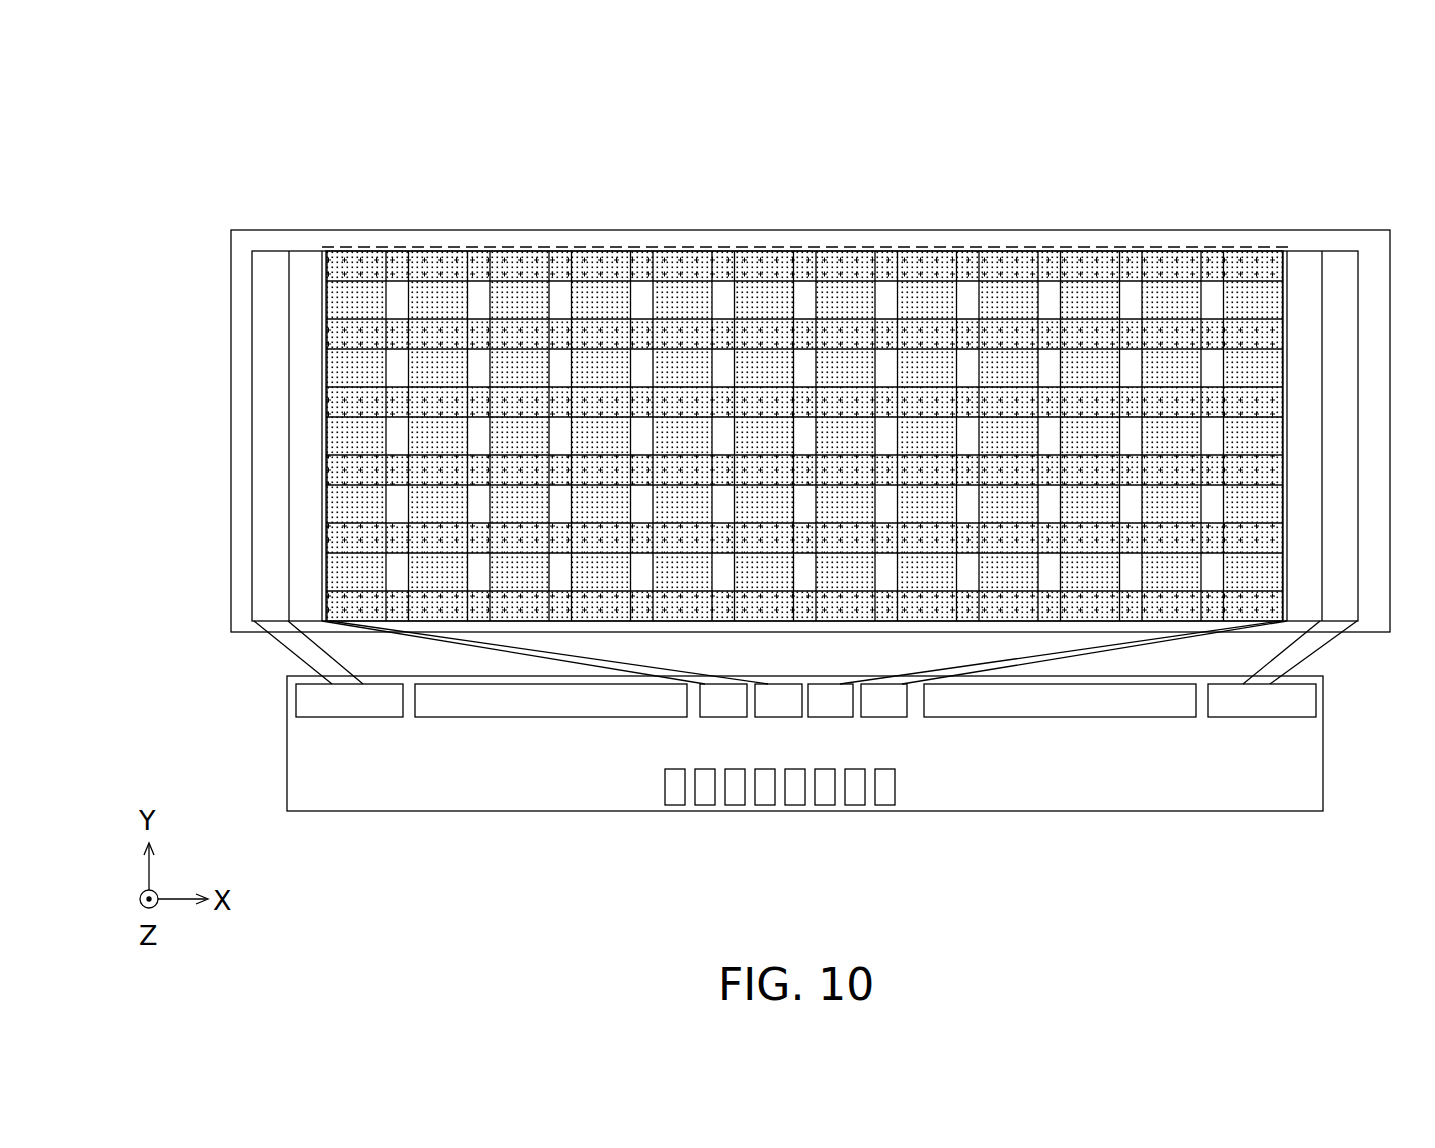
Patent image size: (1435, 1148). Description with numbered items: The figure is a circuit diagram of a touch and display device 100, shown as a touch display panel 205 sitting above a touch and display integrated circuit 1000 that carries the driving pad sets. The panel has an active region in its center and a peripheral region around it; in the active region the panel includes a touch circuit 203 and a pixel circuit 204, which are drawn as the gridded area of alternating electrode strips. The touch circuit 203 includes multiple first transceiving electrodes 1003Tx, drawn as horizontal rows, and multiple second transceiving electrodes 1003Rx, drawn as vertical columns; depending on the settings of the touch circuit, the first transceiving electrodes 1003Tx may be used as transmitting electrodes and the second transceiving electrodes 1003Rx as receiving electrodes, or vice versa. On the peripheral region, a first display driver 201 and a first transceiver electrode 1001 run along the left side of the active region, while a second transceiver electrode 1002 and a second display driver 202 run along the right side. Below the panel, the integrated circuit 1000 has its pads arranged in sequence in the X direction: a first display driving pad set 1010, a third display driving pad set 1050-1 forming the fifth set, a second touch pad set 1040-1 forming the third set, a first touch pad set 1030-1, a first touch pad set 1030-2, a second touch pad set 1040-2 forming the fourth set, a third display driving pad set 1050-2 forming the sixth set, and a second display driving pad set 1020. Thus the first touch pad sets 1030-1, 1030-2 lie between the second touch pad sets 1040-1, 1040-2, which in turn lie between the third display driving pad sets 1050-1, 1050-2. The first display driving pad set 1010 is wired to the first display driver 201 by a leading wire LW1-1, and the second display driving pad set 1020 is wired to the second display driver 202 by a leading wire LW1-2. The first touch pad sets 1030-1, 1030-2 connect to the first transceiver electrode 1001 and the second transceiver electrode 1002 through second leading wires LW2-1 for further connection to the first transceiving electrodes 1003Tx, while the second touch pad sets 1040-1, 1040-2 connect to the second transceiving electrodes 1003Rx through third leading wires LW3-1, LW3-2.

The touch and display device 100 is at (765, 529).
The touch display panel (TDP) 205 is at (231, 237).
The first display driver 201 is at (272, 262).
The second display driver 202 is at (1342, 262).
The touch circuit 203 is at (805, 376).
The pixel circuit 204 is at (805, 390).
The first transceiver electrode 1001 is at (307, 262).
The second transceiver electrode 1002 is at (1297, 262).
The first transceiving electrodes 1003Tx is at (360, 298).
The second transceiving electrodes 1003Rx is at (483, 262).
The driving integrated circuit 1000 is at (286, 745).
The first display driving pad set 1010 is at (352, 717).
The second display driving pad set 1020 is at (1268, 717).
The first touch pad set 1030-1 is at (775, 717).
The first touch pad set 1030-2 is at (830, 717).
The second touch pad set 1040-1 is at (702, 717).
The second touch pad set 1040-2 is at (900, 717).
The third display driving pad set 1050-1 is at (465, 717).
The third display driving pad set 1050-2 is at (1102, 717).
The first lead wires LW1-1 is at (303, 652).
The second lead wires LW1-2 is at (1312, 658).
The second leading wire LW2-1 is at (660, 664).
The third leading wire LW3-1 is at (523, 657).
The third leading wire LW3-2 is at (975, 655).